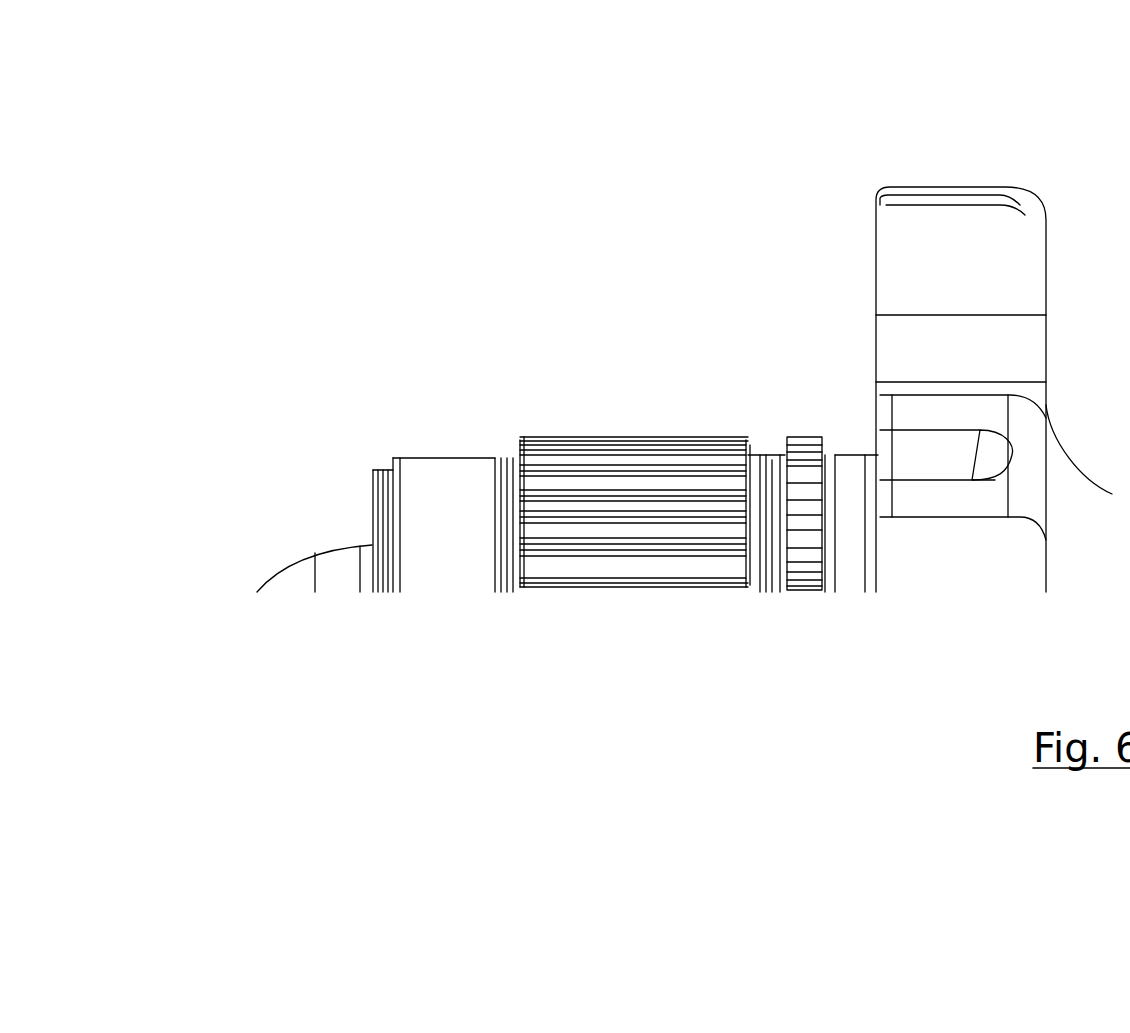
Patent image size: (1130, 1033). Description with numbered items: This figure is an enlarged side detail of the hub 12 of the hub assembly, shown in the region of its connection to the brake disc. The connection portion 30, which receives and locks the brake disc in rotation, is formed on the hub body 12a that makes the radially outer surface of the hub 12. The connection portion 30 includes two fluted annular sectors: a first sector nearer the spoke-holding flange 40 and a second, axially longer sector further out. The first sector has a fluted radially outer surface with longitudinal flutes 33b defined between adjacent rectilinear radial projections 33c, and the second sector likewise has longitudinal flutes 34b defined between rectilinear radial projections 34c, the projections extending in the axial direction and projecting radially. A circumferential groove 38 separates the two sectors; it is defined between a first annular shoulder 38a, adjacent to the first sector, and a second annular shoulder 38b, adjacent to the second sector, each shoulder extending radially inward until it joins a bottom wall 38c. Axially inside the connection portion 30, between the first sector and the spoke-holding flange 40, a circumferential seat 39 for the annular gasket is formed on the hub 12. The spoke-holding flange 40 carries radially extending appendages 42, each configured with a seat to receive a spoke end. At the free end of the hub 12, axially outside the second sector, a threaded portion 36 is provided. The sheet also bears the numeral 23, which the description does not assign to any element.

The hub 12 is at (361, 438).
The hub body 12a is at (450, 456).
The sheet reference 23 is at (990, 35).
The connection portion 30 is at (635, 402).
The longitudinal flutes 33b is at (803, 580).
The rectilinear radial projections 33c is at (800, 440).
The longitudinal flutes 34b is at (618, 580).
The rectilinear radial projections 34c is at (620, 437).
The threaded portion 36 is at (440, 545).
The circumferential groove 38 is at (714, 480).
The first annular shoulder 38a is at (781, 456).
The second annular shoulder 38b is at (770, 458).
The bottom wall 38c is at (772, 460).
The circumferential seat 39 is at (853, 555).
The spoke-holding flange 40 is at (996, 338).
The appendages 42 is at (957, 470).